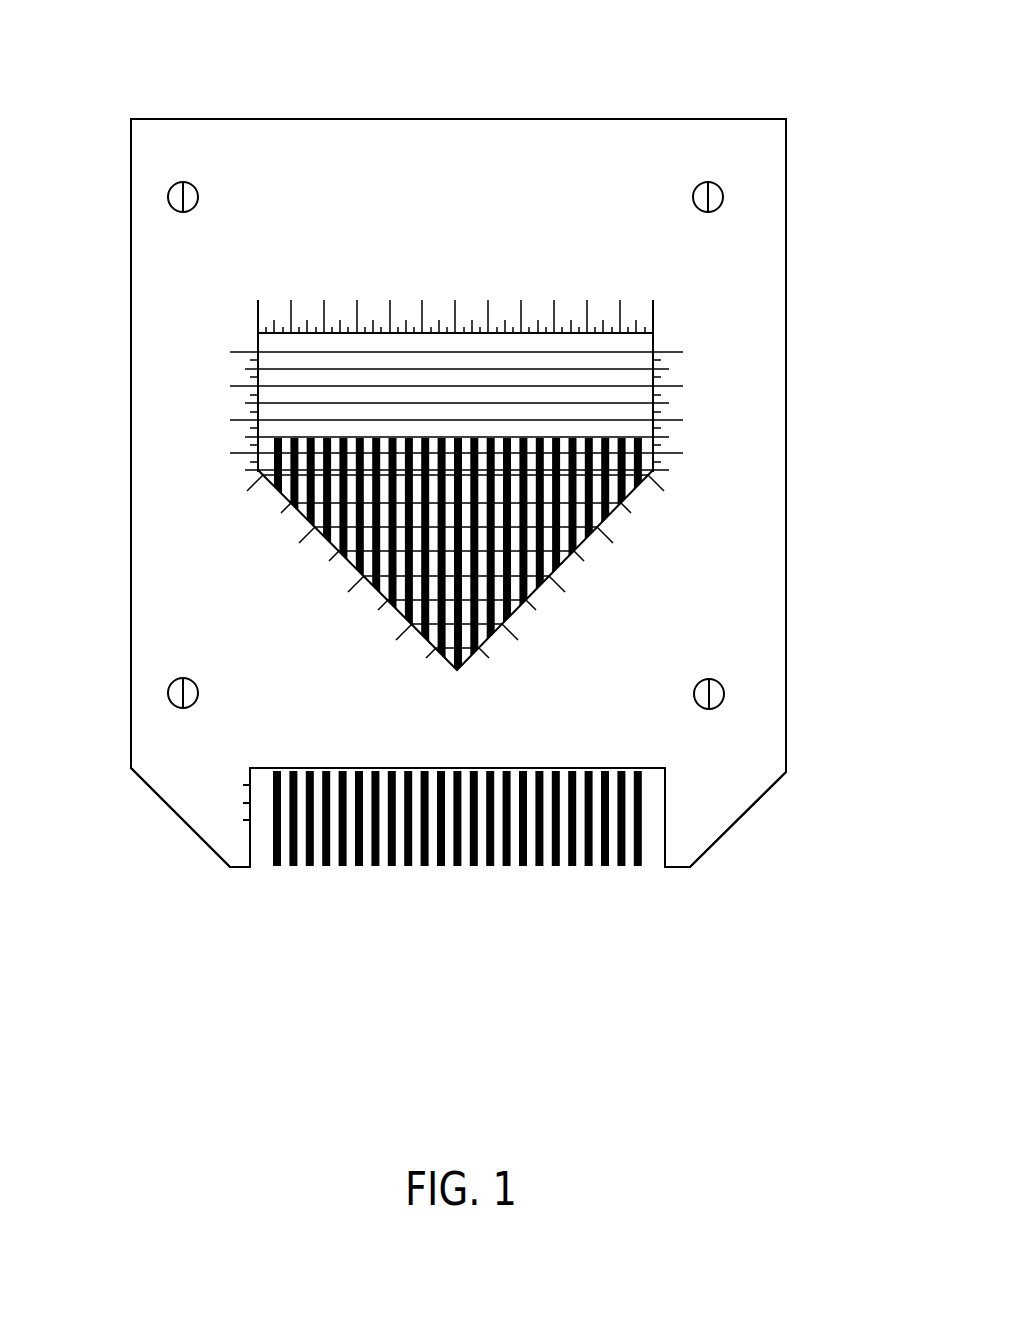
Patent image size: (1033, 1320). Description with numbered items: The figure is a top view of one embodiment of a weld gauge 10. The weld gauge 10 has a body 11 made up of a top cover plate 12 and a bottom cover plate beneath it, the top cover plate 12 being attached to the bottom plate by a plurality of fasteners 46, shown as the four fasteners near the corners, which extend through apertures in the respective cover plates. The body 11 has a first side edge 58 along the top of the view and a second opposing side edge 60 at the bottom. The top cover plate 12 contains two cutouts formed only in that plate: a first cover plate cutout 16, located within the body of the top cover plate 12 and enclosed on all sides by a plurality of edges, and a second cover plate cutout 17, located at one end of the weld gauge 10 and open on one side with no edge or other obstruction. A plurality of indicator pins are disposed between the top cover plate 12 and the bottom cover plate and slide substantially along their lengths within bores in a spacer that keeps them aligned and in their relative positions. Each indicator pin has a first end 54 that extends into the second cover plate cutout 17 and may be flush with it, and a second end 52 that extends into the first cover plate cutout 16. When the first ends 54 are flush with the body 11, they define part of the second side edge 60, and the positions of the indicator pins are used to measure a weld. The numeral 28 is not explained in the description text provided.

The weld gauge 10 is at (851, 288).
The body 11 is at (792, 535).
The top cover plate 12 is at (165, 276).
The first side edge 58 is at (250, 118).
The fasteners 46 is at (720, 183).
The second end 52 is at (588, 437).
The first cover plate cutout 16 is at (520, 612).
The second cover plate cutout 17 is at (666, 800).
The connector region 28 is at (276, 860).
The first end 54 is at (308, 863).
The second side edge 60 is at (676, 870).